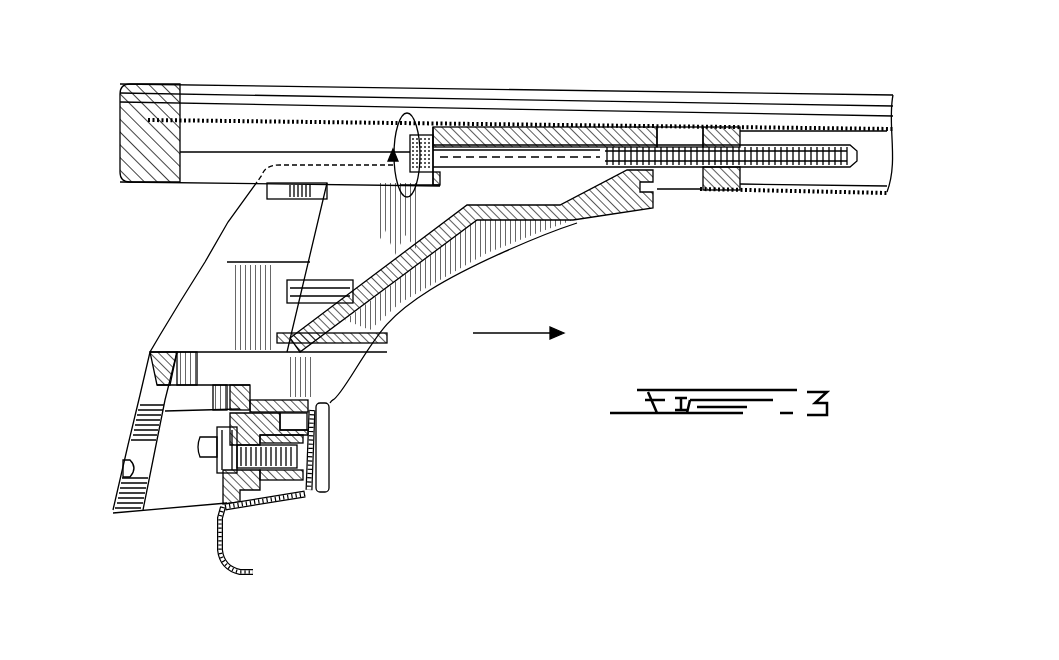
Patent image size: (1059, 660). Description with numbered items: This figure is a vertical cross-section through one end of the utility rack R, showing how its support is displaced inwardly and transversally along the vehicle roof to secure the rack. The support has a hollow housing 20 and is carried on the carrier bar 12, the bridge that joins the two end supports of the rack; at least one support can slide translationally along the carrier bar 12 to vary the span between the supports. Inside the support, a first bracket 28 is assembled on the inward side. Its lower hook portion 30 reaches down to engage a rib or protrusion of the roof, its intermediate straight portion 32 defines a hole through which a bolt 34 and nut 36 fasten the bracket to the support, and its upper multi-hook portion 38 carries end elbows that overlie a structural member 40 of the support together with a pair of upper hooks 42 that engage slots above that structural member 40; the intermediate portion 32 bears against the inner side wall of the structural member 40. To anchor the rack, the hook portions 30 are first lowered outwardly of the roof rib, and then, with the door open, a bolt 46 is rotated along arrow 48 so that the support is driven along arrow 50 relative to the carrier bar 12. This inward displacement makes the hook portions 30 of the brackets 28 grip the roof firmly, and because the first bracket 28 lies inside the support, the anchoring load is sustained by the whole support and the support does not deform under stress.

The utility rack R is at (325, 74).
The carrier bar 12 is at (681, 90).
The hollow housing 20 is at (240, 238).
The first bracket 28 is at (277, 509).
The lower hook portion 30 is at (217, 558).
The intermediate straight portion 32 is at (316, 410).
The bolt 34 is at (316, 467).
The nut 36 is at (223, 457).
The upper multi-hook portion 38 is at (318, 392).
The structural member 40 is at (236, 414).
The upper hooks 42 is at (380, 345).
The bolt 46 is at (676, 162).
The arrow 48 is at (410, 115).
The arrow 50 is at (513, 333).